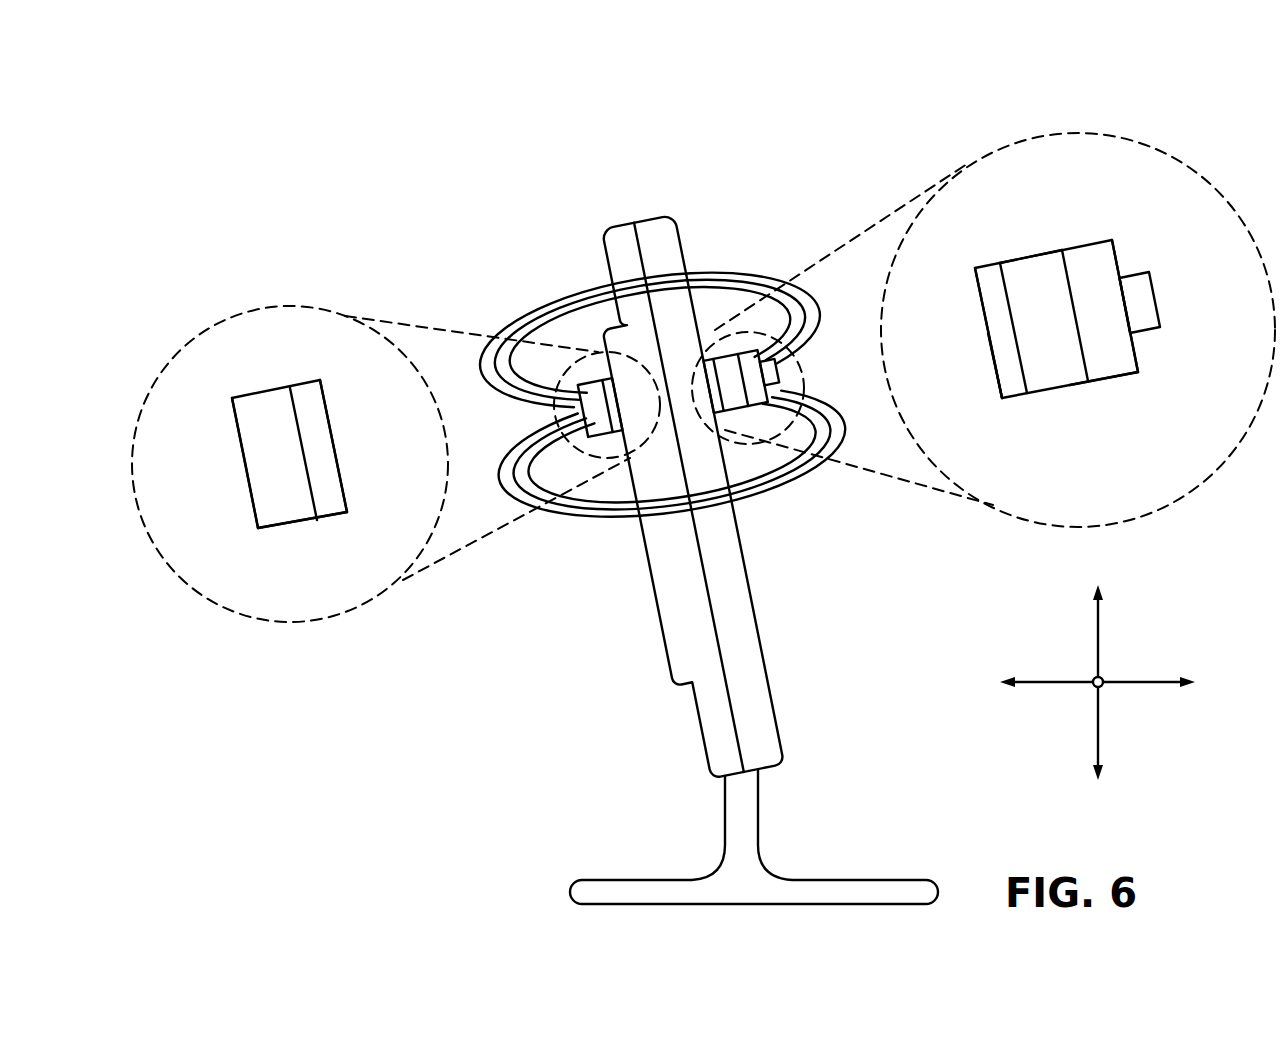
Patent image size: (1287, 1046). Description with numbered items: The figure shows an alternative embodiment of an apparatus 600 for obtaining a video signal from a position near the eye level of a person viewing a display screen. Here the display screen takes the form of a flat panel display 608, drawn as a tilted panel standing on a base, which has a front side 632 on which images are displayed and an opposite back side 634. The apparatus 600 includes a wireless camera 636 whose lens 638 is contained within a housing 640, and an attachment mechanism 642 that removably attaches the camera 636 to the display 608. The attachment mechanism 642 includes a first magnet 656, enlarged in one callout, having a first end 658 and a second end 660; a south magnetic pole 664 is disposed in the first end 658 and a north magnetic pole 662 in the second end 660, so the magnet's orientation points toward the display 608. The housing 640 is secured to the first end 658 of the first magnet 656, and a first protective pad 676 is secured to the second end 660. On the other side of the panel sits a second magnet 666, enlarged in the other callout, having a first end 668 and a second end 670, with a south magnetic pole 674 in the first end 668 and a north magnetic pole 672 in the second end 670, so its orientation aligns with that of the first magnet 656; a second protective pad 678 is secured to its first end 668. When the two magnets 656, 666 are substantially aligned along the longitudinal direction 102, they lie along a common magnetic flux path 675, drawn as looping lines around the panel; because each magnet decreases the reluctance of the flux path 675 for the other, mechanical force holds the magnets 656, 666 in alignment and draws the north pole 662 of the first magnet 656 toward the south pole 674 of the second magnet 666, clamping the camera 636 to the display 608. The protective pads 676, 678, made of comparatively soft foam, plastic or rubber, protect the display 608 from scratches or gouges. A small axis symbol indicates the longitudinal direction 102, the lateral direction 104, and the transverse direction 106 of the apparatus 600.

The apparatus 600 is at (872, 140).
The flat panel display 608 is at (797, 757).
The front side 632 is at (752, 593).
The back side 634 is at (663, 635).
The attachment mechanism 642 is at (710, 257).
The magnetic flux path 675 is at (770, 480).
The first magnet 656 is at (1093, 390).
The wireless camera 636 is at (1150, 383).
The lens 638 is at (1160, 298).
The housing 640 is at (1102, 248).
The first end 658 is at (1067, 262).
The second end 660 is at (1005, 285).
The north magnetic pole 662 is at (1017, 270).
The south magnetic pole 664 is at (1047, 258).
The first protective pad 676 is at (1003, 368).
The second magnet 666 is at (322, 526).
The first end 668 is at (298, 405).
The second end 670 is at (235, 425).
The north magnetic pole 672 is at (253, 487).
The south magnetic pole 674 is at (307, 500).
The second protective pad 678 is at (315, 428).
The longitudinal direction 102 is at (1162, 678).
The lateral direction 104 is at (1095, 687).
The transverse direction 106 is at (1098, 625).